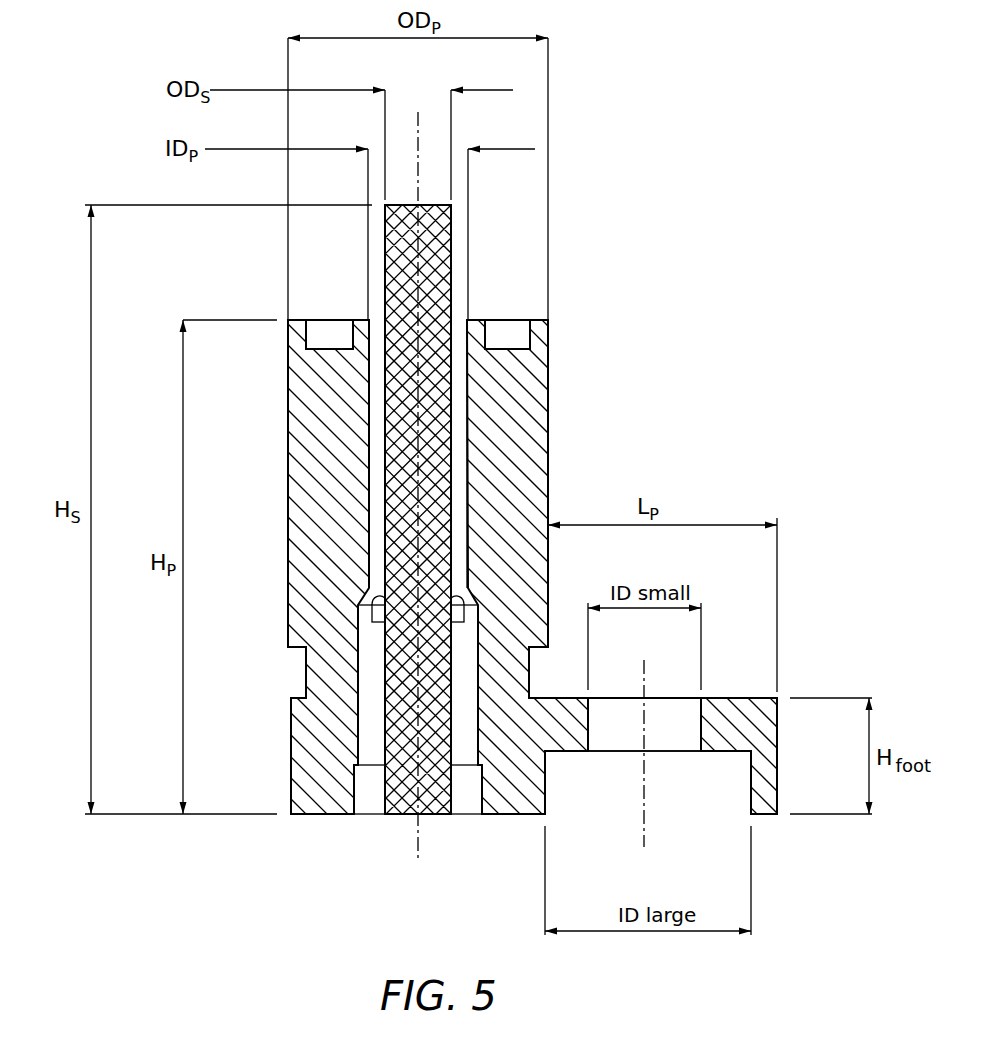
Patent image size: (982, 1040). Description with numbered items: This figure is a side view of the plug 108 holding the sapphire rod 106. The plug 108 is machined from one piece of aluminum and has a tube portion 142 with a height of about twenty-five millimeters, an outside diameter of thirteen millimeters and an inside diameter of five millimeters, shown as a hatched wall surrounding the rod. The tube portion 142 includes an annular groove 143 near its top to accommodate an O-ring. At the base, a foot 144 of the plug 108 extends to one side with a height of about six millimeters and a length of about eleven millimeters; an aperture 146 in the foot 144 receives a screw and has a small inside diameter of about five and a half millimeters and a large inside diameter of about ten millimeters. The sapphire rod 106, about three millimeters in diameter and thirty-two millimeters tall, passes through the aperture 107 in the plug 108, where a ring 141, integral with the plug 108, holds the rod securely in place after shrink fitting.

The sapphire rod 106 is at (455, 212).
The aperture 107 is at (459, 312).
The plug 108 is at (740, 370).
The ring 141 is at (372, 750).
The tube portion 142 is at (288, 466).
The annular groove 143 is at (508, 318).
The foot 144 is at (777, 735).
The aperture 146 is at (671, 698).